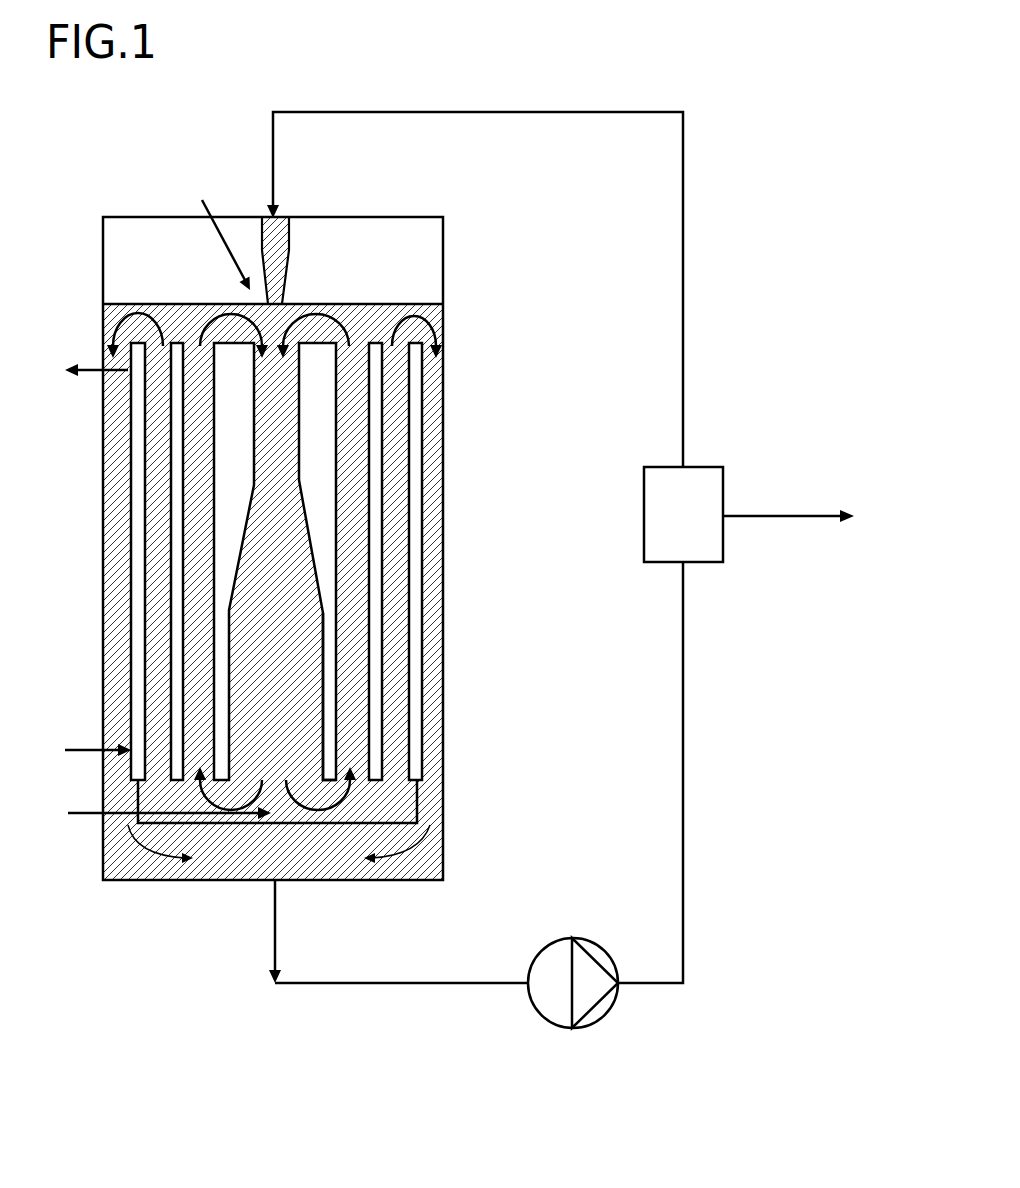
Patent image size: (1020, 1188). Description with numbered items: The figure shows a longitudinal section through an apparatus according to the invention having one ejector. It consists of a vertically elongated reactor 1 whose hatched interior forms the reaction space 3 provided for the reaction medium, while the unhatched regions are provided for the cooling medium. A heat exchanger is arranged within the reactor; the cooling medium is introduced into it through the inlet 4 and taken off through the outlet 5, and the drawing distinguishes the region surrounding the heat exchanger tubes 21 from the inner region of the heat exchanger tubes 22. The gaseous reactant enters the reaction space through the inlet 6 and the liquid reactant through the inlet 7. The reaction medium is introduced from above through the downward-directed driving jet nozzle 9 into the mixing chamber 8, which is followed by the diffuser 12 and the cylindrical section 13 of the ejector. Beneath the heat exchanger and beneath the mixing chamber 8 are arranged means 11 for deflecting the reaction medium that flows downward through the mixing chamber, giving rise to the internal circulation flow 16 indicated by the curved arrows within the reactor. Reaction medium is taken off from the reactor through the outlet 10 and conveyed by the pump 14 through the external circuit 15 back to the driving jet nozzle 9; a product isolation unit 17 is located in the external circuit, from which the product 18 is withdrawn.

The vertically elongated reactor 1 is at (103, 260).
The reaction space 3 is at (385, 315).
The inlet for the cooling medium 4 is at (90, 750).
The outlet for the cooling medium 5 is at (92, 372).
The inlet for the gaseous reactant 6 is at (159, 817).
The inlet for the liquid reactant 7 is at (223, 231).
The mixing chamber 8 is at (298, 400).
The downward-directed driving jet nozzle 9 is at (288, 240).
The outlet for the reaction medium 10 is at (275, 942).
The means for deflecting the reaction medium 11 is at (375, 820).
The diffuser 12 is at (310, 545).
The cylindrical section 13 is at (323, 675).
The pump 14 is at (597, 940).
The external circuit 15 is at (685, 163).
The internal circulation flow 16 is at (202, 325).
The product isolation unit 17 is at (705, 467).
The product 18 is at (783, 514).
The region surrounding the heat exchanger tubes 21 is at (178, 447).
The inner region of the heat exchanger tubes 22 is at (158, 495).